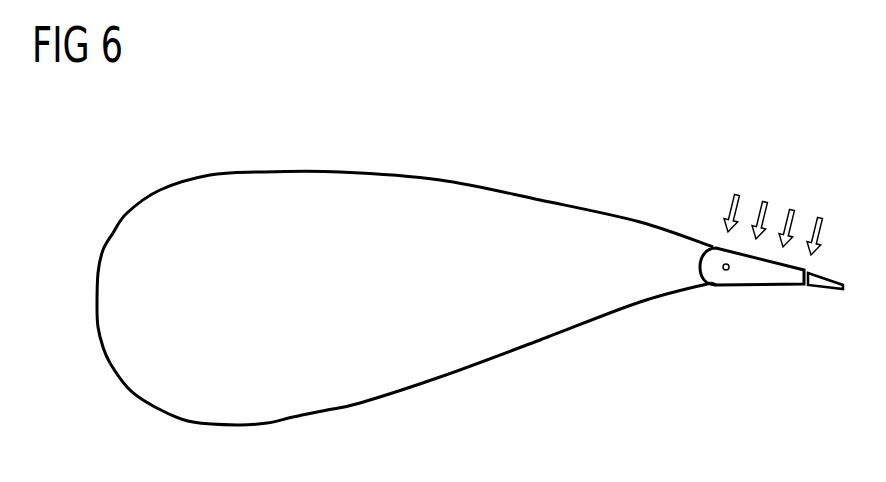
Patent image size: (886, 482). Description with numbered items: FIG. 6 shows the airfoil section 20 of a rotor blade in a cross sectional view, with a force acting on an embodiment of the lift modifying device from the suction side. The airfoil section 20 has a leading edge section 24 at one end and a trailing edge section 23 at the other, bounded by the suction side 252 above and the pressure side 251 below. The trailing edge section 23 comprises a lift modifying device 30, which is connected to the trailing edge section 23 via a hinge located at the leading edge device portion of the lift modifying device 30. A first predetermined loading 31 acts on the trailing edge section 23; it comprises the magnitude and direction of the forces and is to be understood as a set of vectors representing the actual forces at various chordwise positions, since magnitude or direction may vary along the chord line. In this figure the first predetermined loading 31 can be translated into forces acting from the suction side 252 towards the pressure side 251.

The rotor blade airfoil section 20 is at (372, 264).
The suction side 252 is at (362, 172).
The pressure side 251 is at (363, 403).
The leading edge section 24 is at (97, 308).
The trailing edge section 23 is at (719, 303).
The lift modifying device 30 is at (767, 275).
The first predetermined loading 31 is at (776, 207).